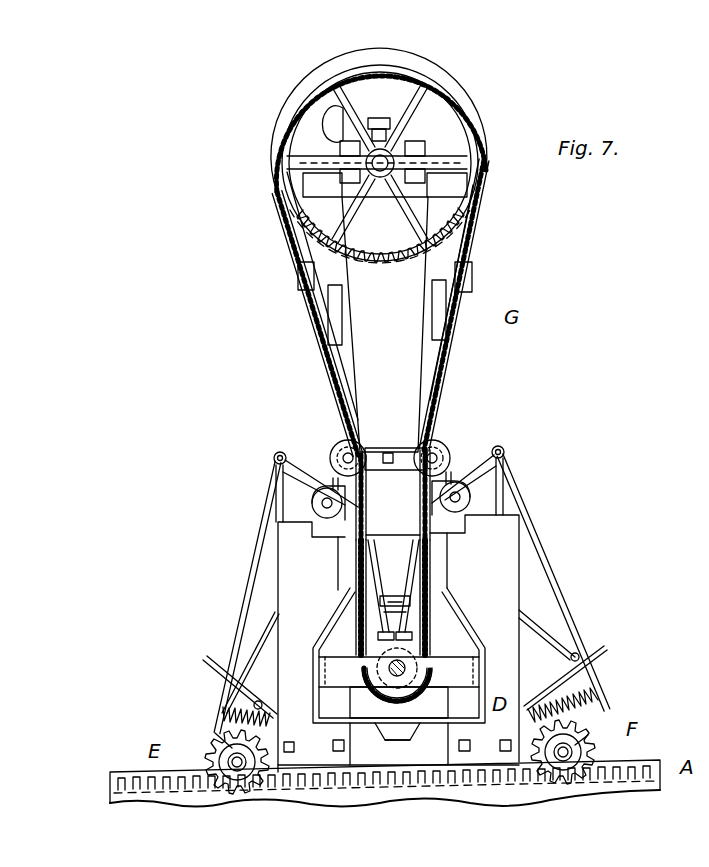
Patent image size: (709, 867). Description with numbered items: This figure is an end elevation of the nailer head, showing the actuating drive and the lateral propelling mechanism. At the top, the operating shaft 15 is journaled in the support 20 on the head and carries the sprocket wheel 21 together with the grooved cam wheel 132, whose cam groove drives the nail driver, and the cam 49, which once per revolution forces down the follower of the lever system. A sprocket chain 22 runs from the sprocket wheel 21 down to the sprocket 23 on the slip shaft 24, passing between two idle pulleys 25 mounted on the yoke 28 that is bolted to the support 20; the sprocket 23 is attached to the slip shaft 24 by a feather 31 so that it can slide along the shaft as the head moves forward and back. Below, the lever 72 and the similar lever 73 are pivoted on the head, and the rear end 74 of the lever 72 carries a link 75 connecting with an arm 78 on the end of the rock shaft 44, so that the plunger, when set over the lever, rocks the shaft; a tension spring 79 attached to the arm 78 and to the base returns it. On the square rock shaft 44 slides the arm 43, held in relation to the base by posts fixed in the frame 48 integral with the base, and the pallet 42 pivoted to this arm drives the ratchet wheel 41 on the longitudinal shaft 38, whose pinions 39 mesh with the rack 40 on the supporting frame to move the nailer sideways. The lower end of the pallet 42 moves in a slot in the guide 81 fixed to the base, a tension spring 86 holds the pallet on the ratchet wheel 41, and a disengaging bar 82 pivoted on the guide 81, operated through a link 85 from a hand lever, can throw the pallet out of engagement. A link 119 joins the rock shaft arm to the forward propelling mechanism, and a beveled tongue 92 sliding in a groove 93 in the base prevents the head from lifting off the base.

The grooved cam wheel 132 is at (488, 122).
The sprocket wheel 21 is at (352, 198).
The operating shaft 15 is at (398, 152).
The cam 49 is at (340, 135).
The support 20 is at (385, 312).
The sprocket chain 22 is at (444, 371).
The yoke 28 is at (386, 448).
The idle pulleys 25 is at (335, 452).
The arm 43 is at (272, 473).
The link 119 is at (276, 501).
The pallet 42 is at (242, 604).
The frame 48 is at (277, 567).
The rock shaft 44 is at (373, 515).
The tension spring 79 is at (352, 559).
The arm 78 is at (393, 528).
The link 75 is at (393, 590).
The rear end 74 is at (387, 618).
The lever 72 is at (410, 600).
The lever 73 is at (412, 614).
The sprocket 23 is at (432, 650).
The slip shaft 24 is at (406, 667).
The feather 31 is at (415, 675).
The link 85 is at (270, 660).
The guide 81 is at (205, 660).
The disengaging bar 82 is at (255, 700).
The tension spring 86 is at (260, 714).
The ratchet wheel 41 is at (232, 745).
The pinion 39 is at (226, 752).
The longitudinal shaft 38 is at (230, 765).
The rack 40 is at (110, 802).
The beveled tongue 92 is at (385, 736).
The groove 93 is at (412, 736).